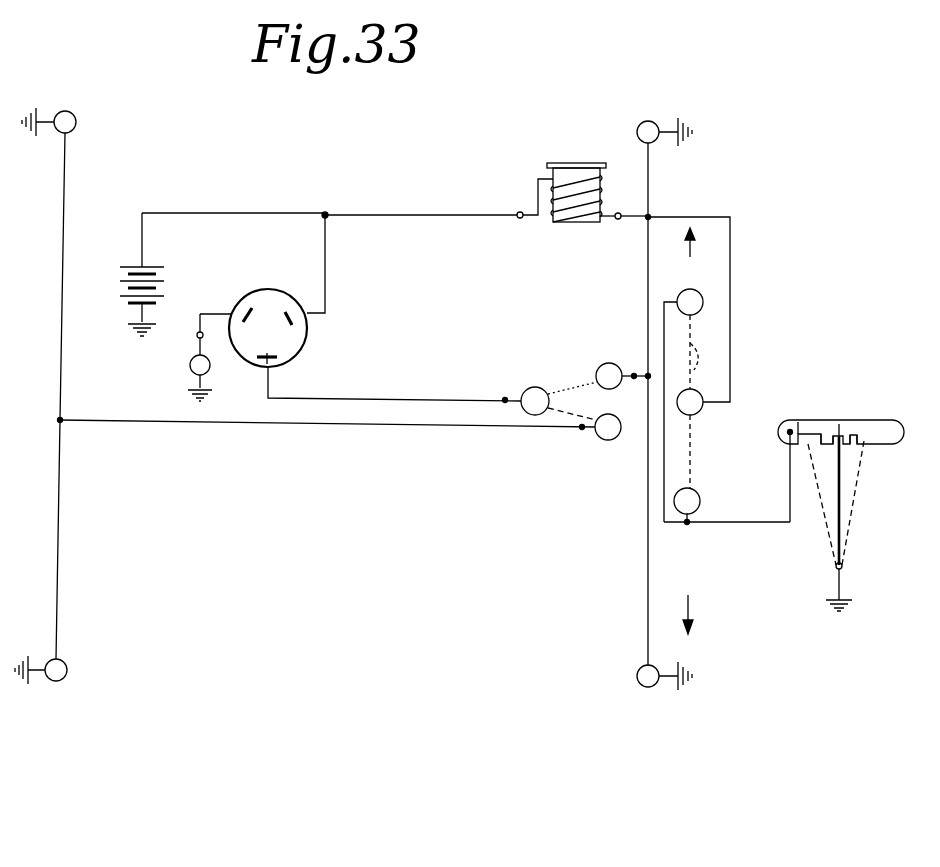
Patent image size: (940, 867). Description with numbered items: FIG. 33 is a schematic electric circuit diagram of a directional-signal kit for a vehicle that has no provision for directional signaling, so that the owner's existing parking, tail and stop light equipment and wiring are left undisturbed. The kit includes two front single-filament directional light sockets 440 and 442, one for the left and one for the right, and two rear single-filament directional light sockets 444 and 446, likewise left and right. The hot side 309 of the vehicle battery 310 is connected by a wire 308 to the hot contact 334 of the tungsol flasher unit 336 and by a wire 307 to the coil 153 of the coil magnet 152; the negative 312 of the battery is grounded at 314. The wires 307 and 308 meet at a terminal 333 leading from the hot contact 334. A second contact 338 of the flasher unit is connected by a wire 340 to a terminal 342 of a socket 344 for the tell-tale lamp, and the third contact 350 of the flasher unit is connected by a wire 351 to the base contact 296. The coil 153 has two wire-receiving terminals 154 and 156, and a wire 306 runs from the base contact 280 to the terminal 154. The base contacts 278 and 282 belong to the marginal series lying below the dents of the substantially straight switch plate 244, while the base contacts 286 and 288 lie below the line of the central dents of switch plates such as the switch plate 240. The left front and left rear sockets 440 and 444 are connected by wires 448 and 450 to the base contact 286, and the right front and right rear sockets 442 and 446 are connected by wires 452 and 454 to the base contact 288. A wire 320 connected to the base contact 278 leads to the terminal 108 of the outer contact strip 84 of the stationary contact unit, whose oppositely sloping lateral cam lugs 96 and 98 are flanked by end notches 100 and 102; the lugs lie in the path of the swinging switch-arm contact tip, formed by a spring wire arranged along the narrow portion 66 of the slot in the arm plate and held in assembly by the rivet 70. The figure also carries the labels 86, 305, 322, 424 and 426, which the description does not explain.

The front single-filament directional light socket 440 is at (76, 114).
The front single-filament directional light socket 442 is at (640, 122).
The rear single-filament directional light socket 444 is at (66, 663).
The rear single-filament directional light socket 446 is at (637, 676).
The wire 448 is at (60, 440).
The wire 450 is at (342, 424).
The wire 452 is at (648, 510).
The wire 454 is at (641, 376).
The wire 308 is at (296, 212).
The wire 307 is at (420, 207).
The hot side of the vehicle battery 309 is at (150, 266).
The vehicle battery 310 is at (126, 290).
The negative of the battery 312 is at (125, 304).
The ground 314 is at (124, 334).
The terminal 333 is at (328, 218).
The hot contact 334 is at (292, 325).
The tungsol flasher unit 336 is at (300, 262).
The second contact 338 is at (249, 316).
The wire 340 is at (210, 313).
The terminal 342 is at (197, 338).
The socket 344 is at (190, 370).
The third contact 350 is at (270, 354).
The wire 351 is at (452, 399).
The coil magnet 152 is at (561, 162).
The coil 153 is at (598, 187).
The wire-receiving terminal 154 is at (621, 220).
The wire-receiving terminal 156 is at (520, 211).
The conductor 305 is at (665, 306).
The wire 306 is at (732, 243).
The base contact 282 is at (712, 278).
The base contact 280 is at (698, 413).
The base contact 278 is at (696, 490).
The switch plate 244 is at (709, 401).
The direction arrow 424 is at (693, 250).
The direction arrow 426 is at (690, 612).
The conductor 322 is at (687, 525).
The base contact 296 is at (528, 388).
The base contact 288 is at (597, 370).
The base contact 286 is at (606, 442).
The switch plate 240 is at (566, 408).
The terminal 108 is at (789, 430).
The outer contact strip 84 is at (812, 422).
The sensor head 86 is at (851, 421).
The end notch 100 is at (808, 443).
The lateral cam lug 96 is at (829, 450).
The rivet 70 is at (834, 445).
The wire 320 is at (790, 503).
The narrow portion of the slot 66 is at (841, 504).
The end notch 102 is at (870, 444).
The lateral cam lug 98 is at (858, 447).